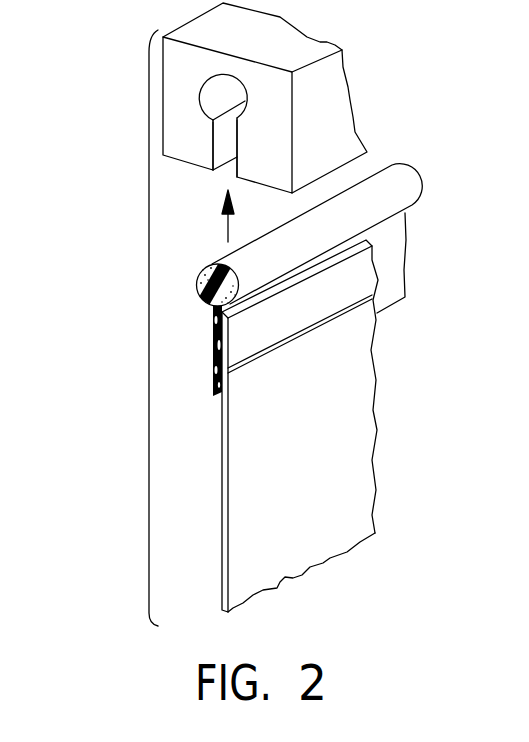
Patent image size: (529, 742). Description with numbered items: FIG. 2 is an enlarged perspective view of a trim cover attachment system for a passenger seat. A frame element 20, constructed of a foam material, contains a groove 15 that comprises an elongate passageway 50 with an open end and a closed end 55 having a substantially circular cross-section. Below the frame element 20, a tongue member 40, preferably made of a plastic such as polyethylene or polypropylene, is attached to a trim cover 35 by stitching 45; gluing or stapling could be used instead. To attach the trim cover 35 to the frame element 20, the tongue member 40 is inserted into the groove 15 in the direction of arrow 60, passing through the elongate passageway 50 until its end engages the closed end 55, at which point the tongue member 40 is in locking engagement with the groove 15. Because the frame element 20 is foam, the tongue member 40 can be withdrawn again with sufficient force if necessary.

The frame element 20 is at (292, 37).
The closed end 55 is at (219, 97).
The groove 15 is at (214, 127).
The elongate passageway 50 is at (226, 144).
The arrow 60 is at (222, 212).
The tongue member 40 is at (197, 278).
The trim cover 35 is at (350, 408).
The stitching 45 is at (342, 310).